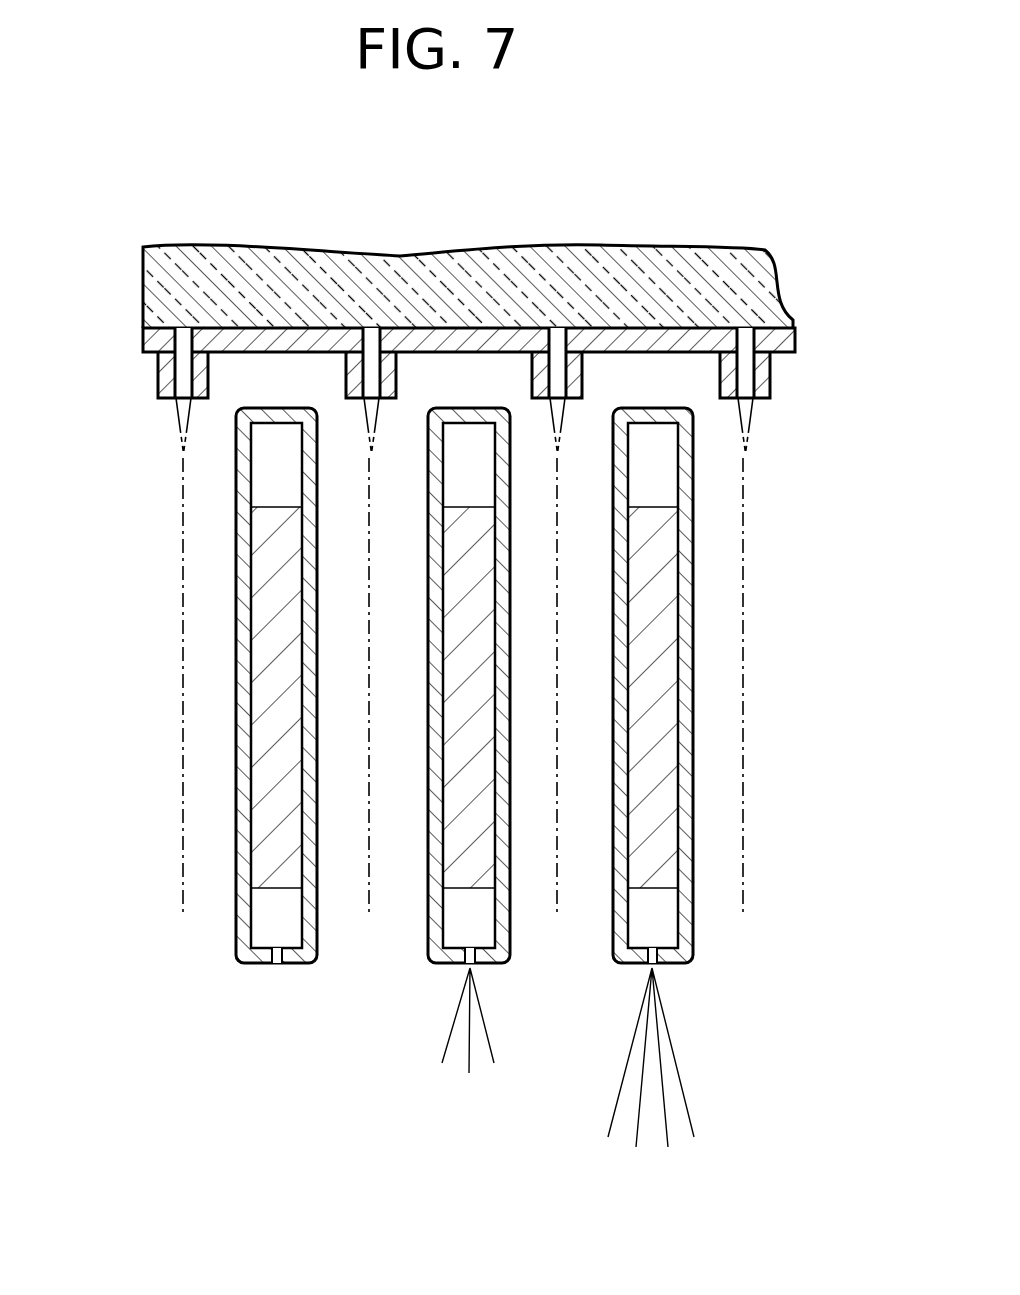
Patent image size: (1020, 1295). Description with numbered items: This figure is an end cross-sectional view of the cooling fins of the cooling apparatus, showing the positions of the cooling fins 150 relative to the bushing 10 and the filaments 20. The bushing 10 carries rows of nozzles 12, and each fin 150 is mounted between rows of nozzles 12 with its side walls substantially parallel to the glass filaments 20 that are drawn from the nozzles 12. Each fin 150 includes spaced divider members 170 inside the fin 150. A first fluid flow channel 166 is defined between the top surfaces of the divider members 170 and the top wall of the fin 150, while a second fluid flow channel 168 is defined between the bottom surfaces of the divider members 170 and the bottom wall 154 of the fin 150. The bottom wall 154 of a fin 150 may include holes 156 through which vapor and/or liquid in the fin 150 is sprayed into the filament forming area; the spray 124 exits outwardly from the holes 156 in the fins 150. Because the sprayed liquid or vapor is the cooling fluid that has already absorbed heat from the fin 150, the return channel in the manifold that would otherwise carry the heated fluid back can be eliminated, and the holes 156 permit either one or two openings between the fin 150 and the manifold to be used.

The bushing 10 is at (466, 340).
The nozzles 12 is at (582, 378).
The filaments 20 is at (183, 610).
The fin 150 is at (318, 918).
The first fluid flow channel 166 is at (265, 468).
The divider members 170 is at (262, 733).
The second fluid flow channel 168 is at (265, 916).
The holes 156 is at (277, 963).
The bottom wall 154 is at (668, 955).
The spray 124 is at (705, 1107).